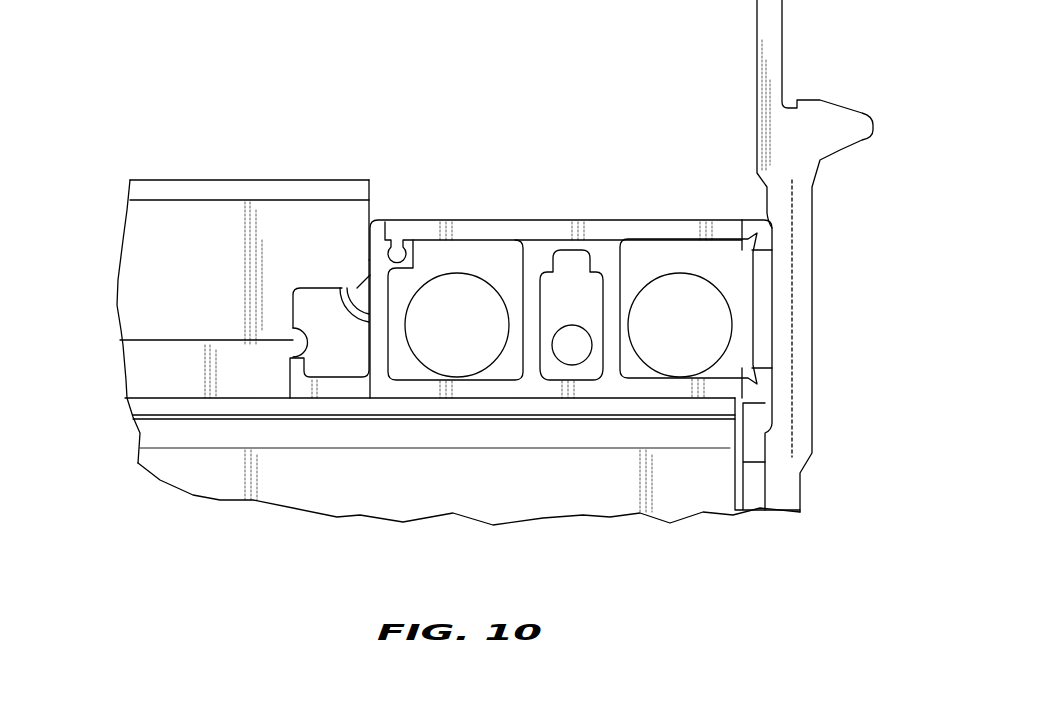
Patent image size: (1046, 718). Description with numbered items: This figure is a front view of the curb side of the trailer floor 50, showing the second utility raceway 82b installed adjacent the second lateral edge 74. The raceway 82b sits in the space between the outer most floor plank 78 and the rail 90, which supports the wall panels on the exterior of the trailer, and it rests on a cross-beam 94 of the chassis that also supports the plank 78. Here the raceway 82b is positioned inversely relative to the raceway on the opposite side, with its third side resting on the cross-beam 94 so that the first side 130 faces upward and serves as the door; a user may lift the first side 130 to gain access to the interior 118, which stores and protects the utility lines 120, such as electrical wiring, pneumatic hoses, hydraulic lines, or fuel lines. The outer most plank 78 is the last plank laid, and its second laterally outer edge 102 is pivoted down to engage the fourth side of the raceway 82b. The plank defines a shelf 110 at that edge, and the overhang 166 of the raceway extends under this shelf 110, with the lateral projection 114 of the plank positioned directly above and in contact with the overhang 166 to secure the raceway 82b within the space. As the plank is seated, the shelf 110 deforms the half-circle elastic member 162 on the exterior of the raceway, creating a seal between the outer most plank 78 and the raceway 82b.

The floor 50 is at (560, 44).
The second lateral edge 74 is at (843, 322).
The floor plank 78 is at (143, 318).
The second utility raceway 82b is at (627, 220).
The rail 90 is at (807, 163).
The cross-beam 94 is at (608, 505).
The second laterally outer edge 102 is at (379, 126).
The shelf 110 is at (287, 234).
The lateral projection 114 is at (300, 328).
The interior 118 is at (467, 272).
The utility line 120 is at (493, 287).
The first side 130 is at (393, 390).
The elastic member 162 is at (358, 328).
The overhang 166 is at (420, 230).